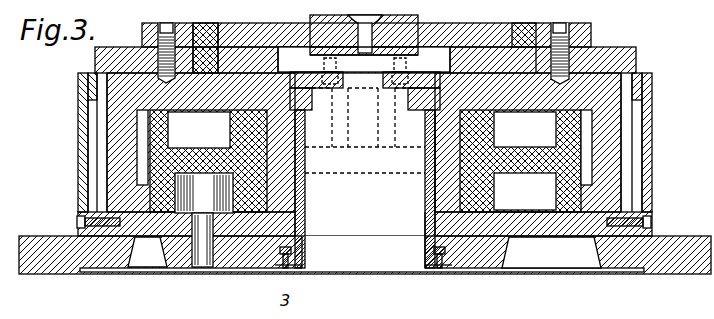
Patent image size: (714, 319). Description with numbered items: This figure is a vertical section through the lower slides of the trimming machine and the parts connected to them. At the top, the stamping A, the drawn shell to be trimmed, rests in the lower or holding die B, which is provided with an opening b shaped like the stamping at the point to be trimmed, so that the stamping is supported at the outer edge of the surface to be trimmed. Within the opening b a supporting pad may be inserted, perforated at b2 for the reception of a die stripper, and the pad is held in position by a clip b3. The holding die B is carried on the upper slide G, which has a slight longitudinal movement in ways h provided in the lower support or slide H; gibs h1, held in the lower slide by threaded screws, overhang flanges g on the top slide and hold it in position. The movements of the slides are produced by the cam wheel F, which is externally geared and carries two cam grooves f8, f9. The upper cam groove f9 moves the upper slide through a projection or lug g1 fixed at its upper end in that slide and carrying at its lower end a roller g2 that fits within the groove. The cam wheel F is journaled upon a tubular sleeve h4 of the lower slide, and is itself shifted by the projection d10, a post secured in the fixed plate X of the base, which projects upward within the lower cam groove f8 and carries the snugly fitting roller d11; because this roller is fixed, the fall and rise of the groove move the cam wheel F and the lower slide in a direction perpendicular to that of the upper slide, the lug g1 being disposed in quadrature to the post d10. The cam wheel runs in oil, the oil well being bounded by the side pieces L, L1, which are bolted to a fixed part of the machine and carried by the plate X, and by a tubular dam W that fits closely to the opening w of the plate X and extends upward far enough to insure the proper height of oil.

The lower slide H is at (107, 63).
The upper slide G is at (214, 26).
The flanges g is at (205, 36).
The pocket chamber Q is at (443, 38).
The stamping A is at (355, 17).
The holding die B is at (418, 17).
The opening b is at (325, 56).
The perforation b2 is at (343, 86).
The roller g2 is at (397, 123).
The clip b3 is at (357, 57).
The projection or lug g1 is at (373, 98).
The cam wheel F is at (584, 162).
The upper cam groove f9 is at (199, 130).
The lower cam groove f8 is at (525, 191).
The side piece L is at (83, 139).
The side piece L1 is at (648, 145).
The plate X is at (268, 250).
The roller d11 is at (147, 252).
The projection or post d10 is at (201, 258).
The tubular dam W is at (305, 194).
The tubular sleeve h4 is at (443, 193).
The opening w is at (430, 222).
The ways h is at (197, 78).
The gibs h1 is at (585, 34).